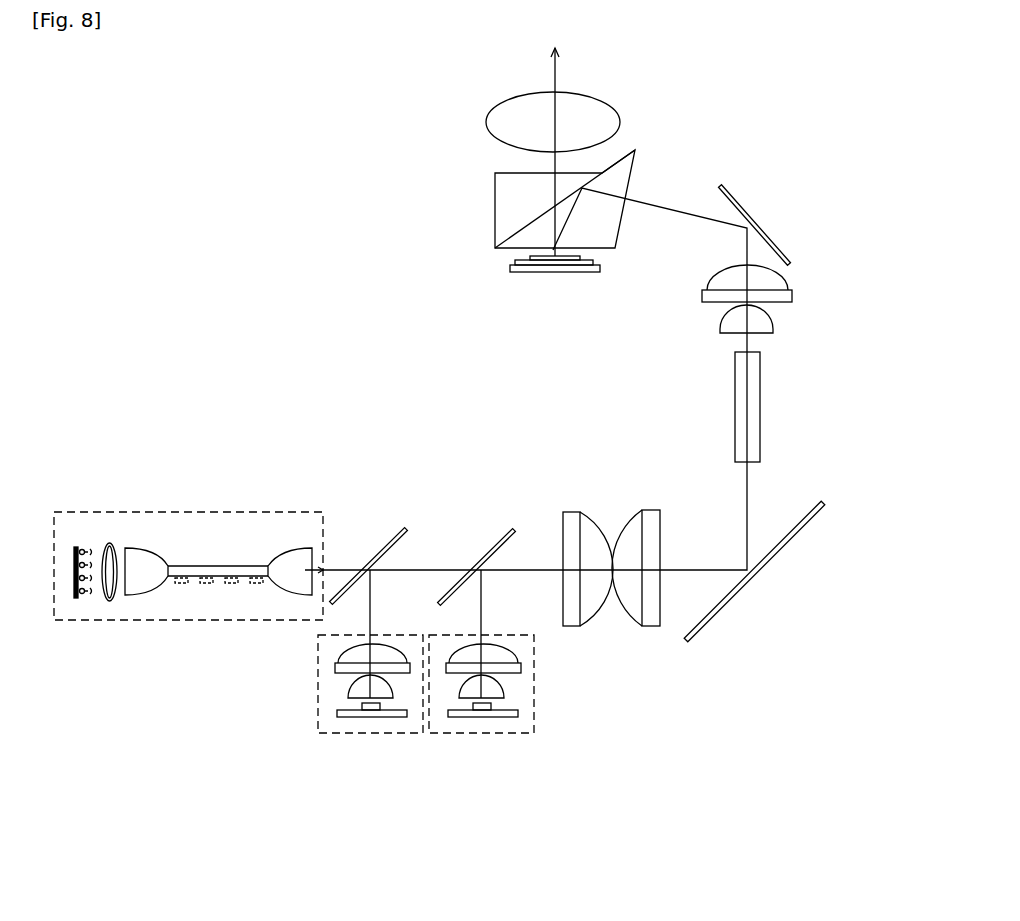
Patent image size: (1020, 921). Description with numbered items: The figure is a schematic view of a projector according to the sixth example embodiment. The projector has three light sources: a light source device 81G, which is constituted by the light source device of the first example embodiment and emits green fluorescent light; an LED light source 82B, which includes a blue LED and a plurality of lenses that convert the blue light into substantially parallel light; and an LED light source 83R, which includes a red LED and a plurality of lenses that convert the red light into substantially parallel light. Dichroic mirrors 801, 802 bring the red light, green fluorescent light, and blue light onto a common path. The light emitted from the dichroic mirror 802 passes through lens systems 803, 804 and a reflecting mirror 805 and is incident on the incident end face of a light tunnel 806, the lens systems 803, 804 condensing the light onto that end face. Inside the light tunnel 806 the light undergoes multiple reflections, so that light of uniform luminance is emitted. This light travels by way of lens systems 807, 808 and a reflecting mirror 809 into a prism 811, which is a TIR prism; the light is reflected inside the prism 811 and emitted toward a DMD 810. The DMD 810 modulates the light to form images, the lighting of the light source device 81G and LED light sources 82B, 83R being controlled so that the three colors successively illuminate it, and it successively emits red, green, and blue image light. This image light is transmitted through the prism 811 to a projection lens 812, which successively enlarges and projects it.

The dichroic mirror 801 is at (400, 528).
The dichroic mirror 802 is at (513, 530).
The lens system 803 is at (592, 500).
The lens system 804 is at (655, 510).
The reflecting mirror 805 is at (823, 500).
The light tunnel 806 is at (735, 418).
The lens system 807 is at (773, 330).
The lens system 808 is at (792, 297).
The reflecting mirror 809 is at (748, 165).
The DMD 810 is at (535, 277).
The prism 811 is at (495, 205).
The projection lens 812 is at (608, 108).
The light source device 81G is at (180, 515).
The LED light source 82B is at (345, 735).
The LED light source 83R is at (490, 735).